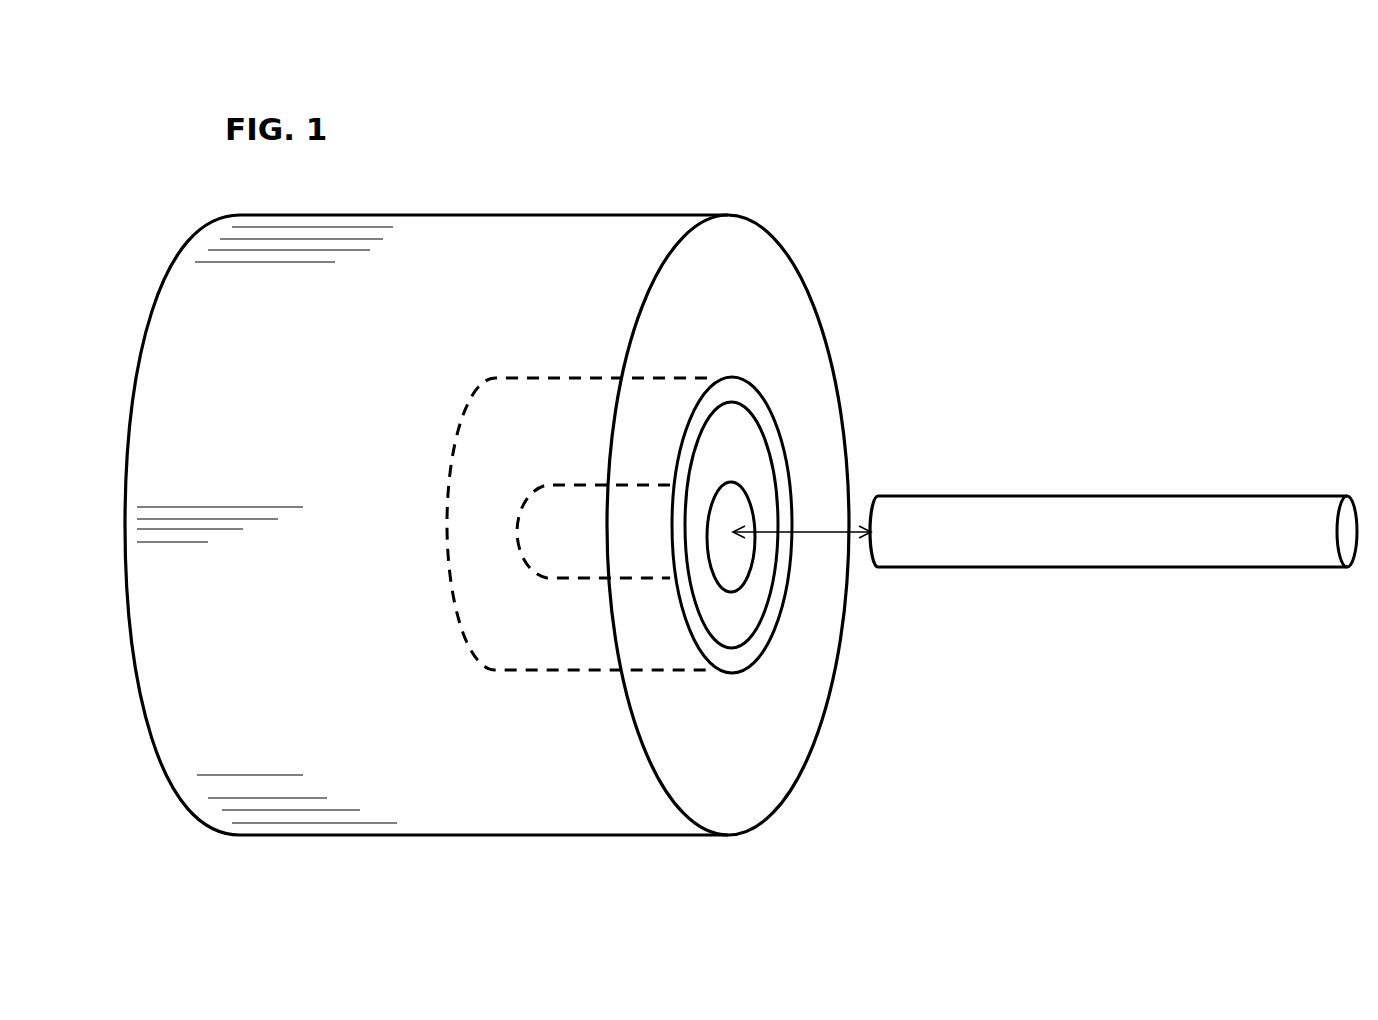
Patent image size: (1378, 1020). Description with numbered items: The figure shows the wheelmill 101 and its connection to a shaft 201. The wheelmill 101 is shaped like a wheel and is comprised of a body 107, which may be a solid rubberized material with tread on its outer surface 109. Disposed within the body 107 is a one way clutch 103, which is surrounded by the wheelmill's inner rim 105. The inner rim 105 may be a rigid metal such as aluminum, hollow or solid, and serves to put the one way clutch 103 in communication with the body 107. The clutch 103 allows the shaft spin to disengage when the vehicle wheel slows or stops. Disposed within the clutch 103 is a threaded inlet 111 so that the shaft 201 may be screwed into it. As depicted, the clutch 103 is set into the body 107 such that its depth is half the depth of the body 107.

The wheelmill 101 is at (586, 436).
The one way clutch 103 is at (735, 447).
The inner rim 105 is at (732, 659).
The body 107 is at (725, 308).
The outer surface 109 is at (472, 217).
The threaded inlet 111 is at (579, 545).
The shaft 201 is at (1213, 507).